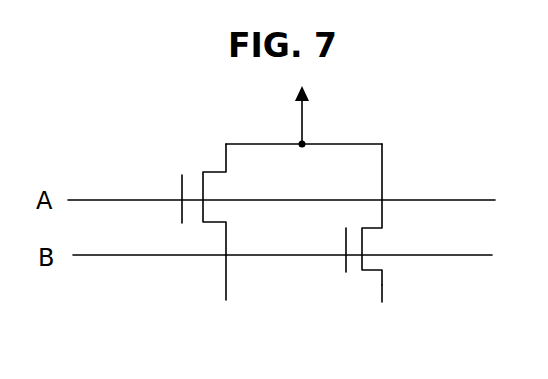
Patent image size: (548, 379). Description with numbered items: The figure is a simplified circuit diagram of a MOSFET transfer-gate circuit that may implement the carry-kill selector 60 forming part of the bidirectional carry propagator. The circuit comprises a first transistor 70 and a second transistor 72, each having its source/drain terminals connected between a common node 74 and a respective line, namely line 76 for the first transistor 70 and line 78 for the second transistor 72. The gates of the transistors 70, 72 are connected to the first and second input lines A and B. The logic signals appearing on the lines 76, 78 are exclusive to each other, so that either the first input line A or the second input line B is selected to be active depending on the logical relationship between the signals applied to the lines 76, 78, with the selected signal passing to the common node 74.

The carry-kill selector 60 is at (434, 137).
The first transistor 70 is at (389, 262).
The second transistor 72 is at (188, 167).
The common node 74 is at (302, 150).
The line 76 is at (378, 287).
The line 78 is at (226, 280).